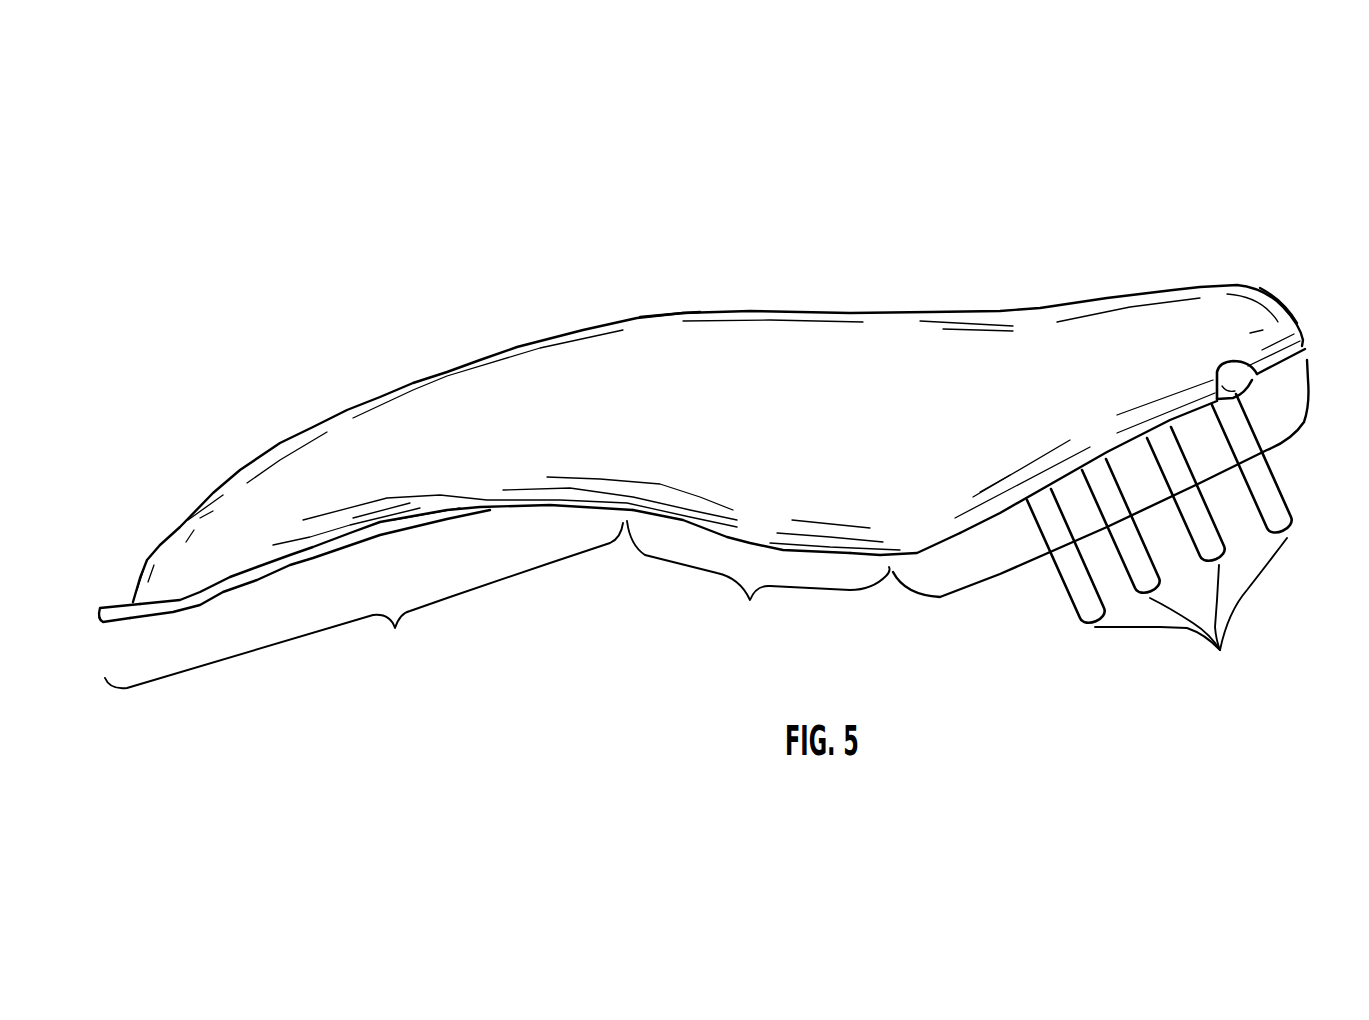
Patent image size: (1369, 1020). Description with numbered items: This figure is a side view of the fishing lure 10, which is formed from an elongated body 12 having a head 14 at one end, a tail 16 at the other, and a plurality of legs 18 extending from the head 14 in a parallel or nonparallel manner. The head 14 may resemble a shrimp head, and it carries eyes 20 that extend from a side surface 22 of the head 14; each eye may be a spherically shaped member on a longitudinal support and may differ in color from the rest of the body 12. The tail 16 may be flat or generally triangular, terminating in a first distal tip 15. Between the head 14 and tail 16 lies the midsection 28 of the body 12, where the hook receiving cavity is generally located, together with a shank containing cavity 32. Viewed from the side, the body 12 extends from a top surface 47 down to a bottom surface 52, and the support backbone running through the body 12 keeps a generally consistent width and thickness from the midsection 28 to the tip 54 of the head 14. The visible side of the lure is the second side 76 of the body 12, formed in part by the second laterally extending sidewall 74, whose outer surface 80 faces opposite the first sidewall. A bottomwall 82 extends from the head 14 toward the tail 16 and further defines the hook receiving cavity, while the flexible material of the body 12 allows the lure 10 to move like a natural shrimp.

The fishing lure 10 is at (1092, 215).
The body 12 is at (767, 310).
The head 14 is at (1175, 500).
The first distal tip 15 is at (102, 622).
The tail 16 is at (369, 596).
The plurality of legs 18 is at (1191, 612).
The eyes 20 is at (1240, 377).
The side surface 22 is at (1156, 353).
The midsection 28 is at (758, 577).
The shank containing cavity 32 is at (1288, 318).
The top surface 47 is at (670, 317).
The bottom surface 52 is at (728, 530).
The tip of the head 54 is at (1305, 334).
The second laterally extending sidewall 74 is at (935, 505).
The second side 76 is at (991, 468).
The outer surface of the second sidewall 80 is at (949, 445).
The bottomwall 82 is at (977, 525).